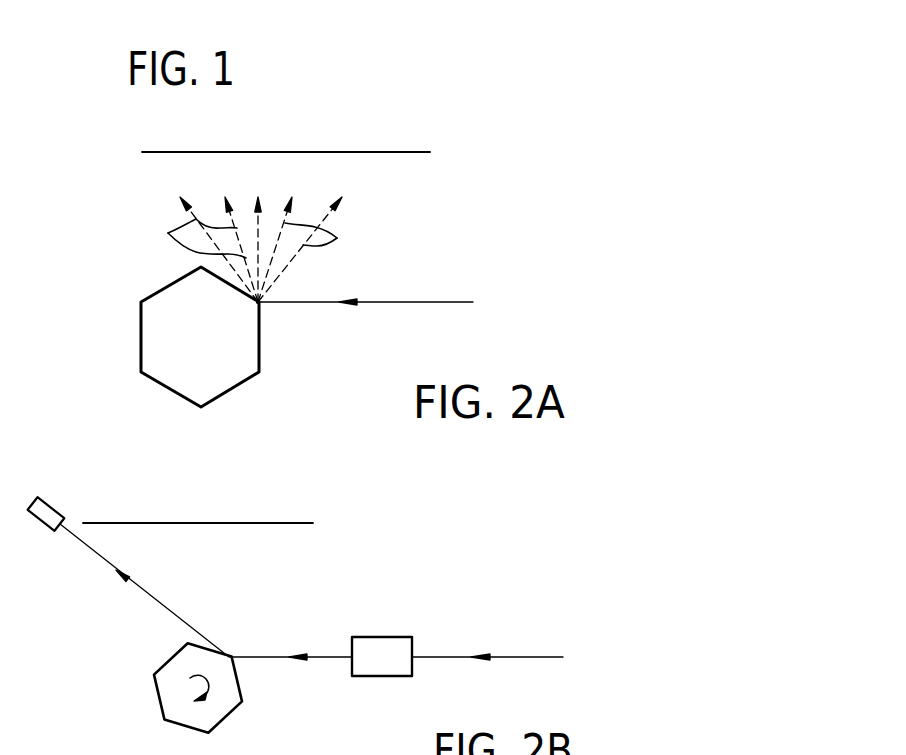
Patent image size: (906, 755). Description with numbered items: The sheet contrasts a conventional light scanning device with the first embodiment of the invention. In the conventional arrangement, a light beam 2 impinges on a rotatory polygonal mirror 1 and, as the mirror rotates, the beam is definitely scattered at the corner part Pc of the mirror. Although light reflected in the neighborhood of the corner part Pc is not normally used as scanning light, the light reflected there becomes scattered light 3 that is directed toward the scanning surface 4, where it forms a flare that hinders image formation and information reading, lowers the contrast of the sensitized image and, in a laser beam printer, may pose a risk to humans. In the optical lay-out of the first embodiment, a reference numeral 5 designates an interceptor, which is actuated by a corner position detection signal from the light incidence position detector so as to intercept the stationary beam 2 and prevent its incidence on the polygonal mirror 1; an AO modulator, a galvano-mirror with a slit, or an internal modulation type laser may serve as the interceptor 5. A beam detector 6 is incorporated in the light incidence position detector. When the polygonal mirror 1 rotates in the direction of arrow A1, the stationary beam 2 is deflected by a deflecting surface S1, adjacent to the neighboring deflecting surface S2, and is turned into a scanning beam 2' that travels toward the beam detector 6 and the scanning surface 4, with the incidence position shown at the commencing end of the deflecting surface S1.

In FIG. 1, the polygonal mirror 1 is at (236, 387).
In FIG. 2A, the polygonal mirror 1 is at (235, 713).
In FIG. 1, the light beam 2 is at (366, 327).
In FIG. 2A, the light beam 2 is at (396, 681).
In FIG. 2A, the scanning beam 2' is at (144, 590).
In FIG. 1, the scattered light 3 is at (250, 249).
In FIG. 1, the scanning surface 4 is at (315, 152).
In FIG. 2A, the scanning surface 4 is at (261, 523).
In FIG. 2A, the interceptor 5 is at (378, 677).
In FIG. 2A, the beam detector 6 is at (54, 503).
In FIG. 1, the corner part Pc is at (261, 306).
In FIG. 2A, the deflecting surface S1 is at (200, 640).
In FIG. 2A, the deflecting surface S2 is at (168, 658).
In FIG. 2A, the direction of rotation A1 is at (198, 702).